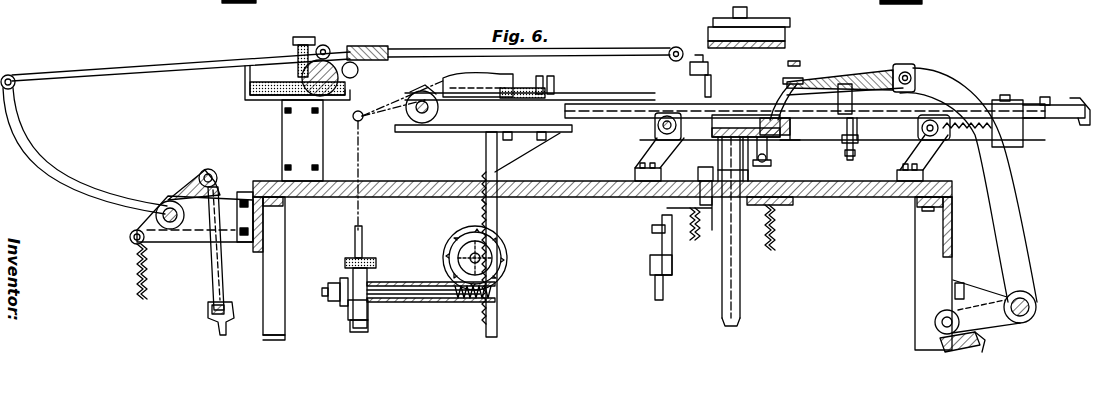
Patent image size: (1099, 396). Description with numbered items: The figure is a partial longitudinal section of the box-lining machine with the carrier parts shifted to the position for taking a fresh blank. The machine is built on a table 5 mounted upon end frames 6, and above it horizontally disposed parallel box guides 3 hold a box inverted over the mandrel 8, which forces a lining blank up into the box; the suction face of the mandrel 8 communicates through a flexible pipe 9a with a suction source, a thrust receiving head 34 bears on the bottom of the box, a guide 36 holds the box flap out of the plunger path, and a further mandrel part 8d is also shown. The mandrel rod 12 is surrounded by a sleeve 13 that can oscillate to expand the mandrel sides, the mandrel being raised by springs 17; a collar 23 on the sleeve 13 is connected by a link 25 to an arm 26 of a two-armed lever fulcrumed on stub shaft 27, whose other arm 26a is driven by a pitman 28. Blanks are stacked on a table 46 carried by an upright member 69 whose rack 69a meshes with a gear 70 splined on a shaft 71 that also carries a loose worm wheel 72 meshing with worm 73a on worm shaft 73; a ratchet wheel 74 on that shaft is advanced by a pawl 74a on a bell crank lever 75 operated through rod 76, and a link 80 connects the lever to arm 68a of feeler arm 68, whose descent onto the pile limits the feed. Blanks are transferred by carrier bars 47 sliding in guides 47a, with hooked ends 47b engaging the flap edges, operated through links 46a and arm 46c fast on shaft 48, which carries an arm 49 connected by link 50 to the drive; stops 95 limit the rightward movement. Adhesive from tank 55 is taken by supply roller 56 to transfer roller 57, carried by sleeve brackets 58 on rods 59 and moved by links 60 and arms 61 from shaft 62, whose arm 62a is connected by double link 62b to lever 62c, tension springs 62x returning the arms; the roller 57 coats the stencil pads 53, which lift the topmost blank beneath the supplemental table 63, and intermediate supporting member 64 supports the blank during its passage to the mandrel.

The box guides 3 is at (688, 68).
The table 5 is at (578, 186).
The end frames 6 is at (254, 253).
The mandrel 8 is at (775, 116).
The bolt 8d is at (848, 140).
The flexible pipe 9a is at (768, 152).
The rod 12 is at (740, 322).
The sleeve 13 is at (742, 252).
The springs 17 is at (688, 212).
The collar 23 is at (773, 225).
The link 25 is at (716, 165).
The lever arm 26 is at (700, 175).
The lever arm 26a is at (672, 245).
The stub shaft 27 is at (652, 231).
The pitman 28 is at (656, 290).
The thrust receiving head 34 is at (785, 34).
The guide 36 is at (712, 86).
The table 46 is at (562, 130).
The links 46a is at (866, 84).
The arm 46c is at (960, 96).
The carrier bars 47 is at (553, 100).
The guides 47a is at (657, 125).
The hooked ends 47b is at (423, 118).
The shaft 48 is at (1036, 302).
The arm 49 is at (980, 312).
The link 50 is at (988, 345).
The stencil pads 53 is at (530, 82).
The tank 55 is at (262, 102).
The supply roller 56 is at (303, 75).
The transfer roller 57 is at (358, 70).
The sleeve brackets 58 is at (372, 47).
The rods 59 is at (468, 50).
The links 60 is at (160, 62).
The arms 61 is at (74, 205).
The shaft 62 is at (168, 198).
The arm 62a is at (188, 170).
The double link connection 62b is at (216, 257).
The lever 62c is at (210, 326).
The tension springs 62x is at (143, 280).
The supplemental table 63 is at (596, 104).
The intermediate supporting member 64 is at (624, 125).
The feeler arm 68 is at (497, 76).
The arm 68a is at (375, 122).
The upright member 69 is at (488, 158).
The rack 69a is at (485, 202).
The gear 70 is at (450, 250).
The shaft 71 is at (458, 260).
The worm wheel 72 is at (448, 236).
The worm shaft 73 is at (410, 303).
The worm 73a is at (472, 304).
The ratchet wheel 74 is at (350, 275).
The pawl 74a is at (338, 302).
The bell crank lever 75 is at (370, 312).
The rod 76 is at (354, 332).
The link 80 is at (356, 232).
The stops 95 is at (1074, 126).